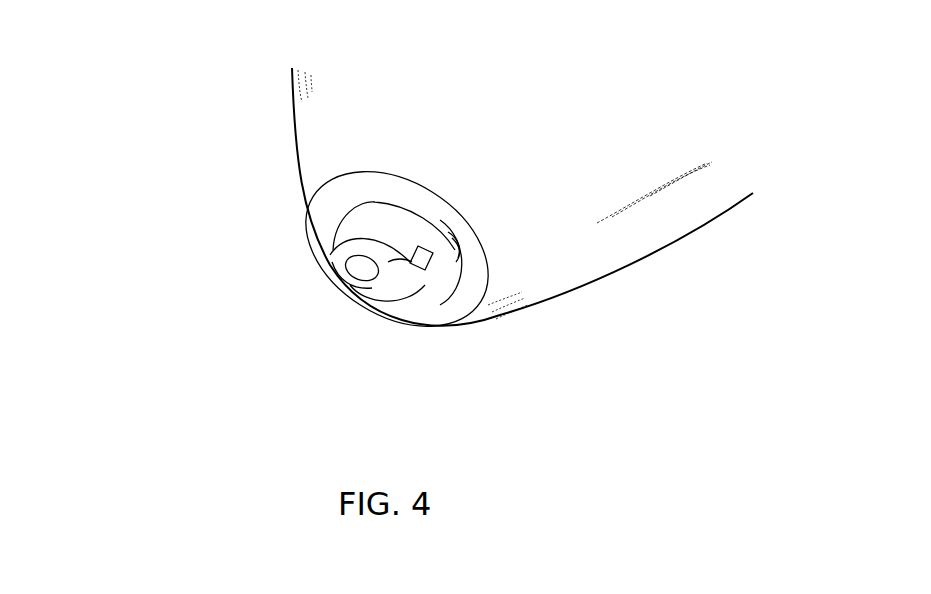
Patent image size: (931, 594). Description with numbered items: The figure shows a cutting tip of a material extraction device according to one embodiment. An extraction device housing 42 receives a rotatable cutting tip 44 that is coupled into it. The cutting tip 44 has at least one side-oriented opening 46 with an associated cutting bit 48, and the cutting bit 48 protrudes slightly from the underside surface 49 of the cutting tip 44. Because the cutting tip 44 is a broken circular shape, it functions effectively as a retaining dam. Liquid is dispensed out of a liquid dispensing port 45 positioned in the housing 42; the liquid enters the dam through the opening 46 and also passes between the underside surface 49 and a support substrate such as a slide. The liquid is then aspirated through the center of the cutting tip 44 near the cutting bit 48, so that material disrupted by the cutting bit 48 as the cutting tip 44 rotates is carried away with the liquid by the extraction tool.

The extraction device housing 42 is at (365, 163).
The cutting tip 44 is at (373, 223).
The liquid dispensing port 45 is at (455, 242).
The side-oriented opening 46 is at (418, 258).
The cutting bit 48 is at (372, 287).
The underside surface 49 is at (342, 259).